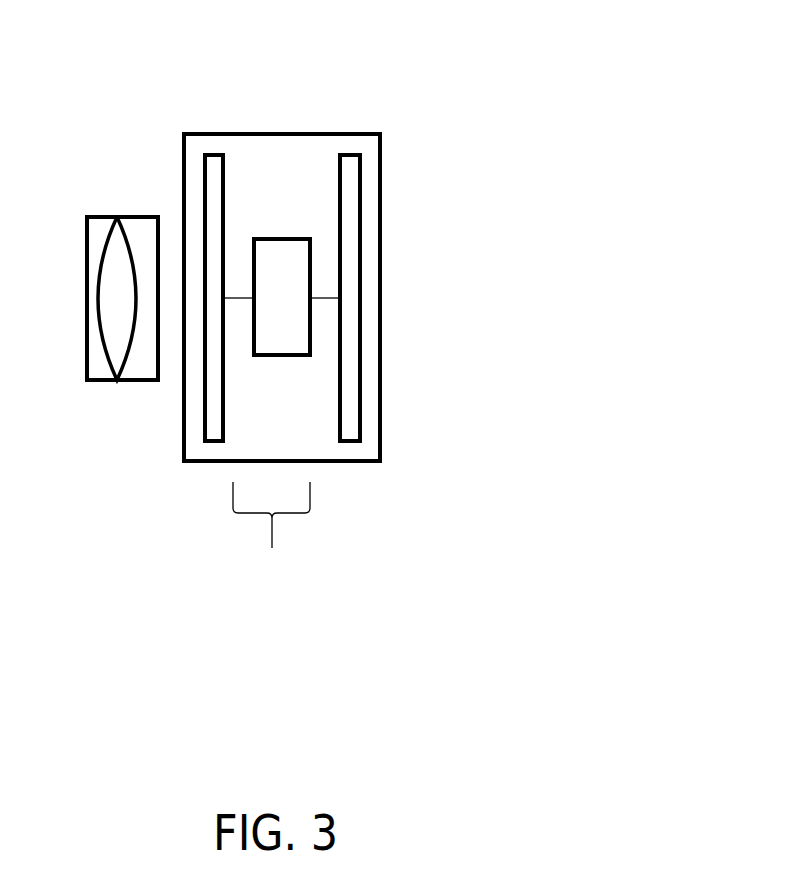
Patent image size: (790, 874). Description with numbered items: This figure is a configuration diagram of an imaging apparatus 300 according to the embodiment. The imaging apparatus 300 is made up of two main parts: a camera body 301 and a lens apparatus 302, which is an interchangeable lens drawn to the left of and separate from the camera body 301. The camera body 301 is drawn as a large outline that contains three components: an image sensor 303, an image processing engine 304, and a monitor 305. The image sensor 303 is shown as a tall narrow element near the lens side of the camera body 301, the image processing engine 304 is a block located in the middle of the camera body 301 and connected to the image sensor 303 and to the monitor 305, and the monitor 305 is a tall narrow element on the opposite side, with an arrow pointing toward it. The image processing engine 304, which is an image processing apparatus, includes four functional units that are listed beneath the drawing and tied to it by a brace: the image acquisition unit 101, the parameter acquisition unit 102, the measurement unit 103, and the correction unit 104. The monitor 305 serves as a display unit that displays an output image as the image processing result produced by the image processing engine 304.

The imaging apparatus 300 is at (483, 47).
The camera body 301 is at (385, 397).
The lens apparatus 302 is at (118, 267).
The image sensor 303 is at (212, 257).
The image processing engine 304 is at (286, 268).
The monitor 305 is at (348, 298).
The image acquisition unit 101 is at (282, 532).
The parameter acquisition unit 102 is at (283, 599).
The measurement unit 103 is at (281, 629).
The correction unit 104 is at (283, 659).